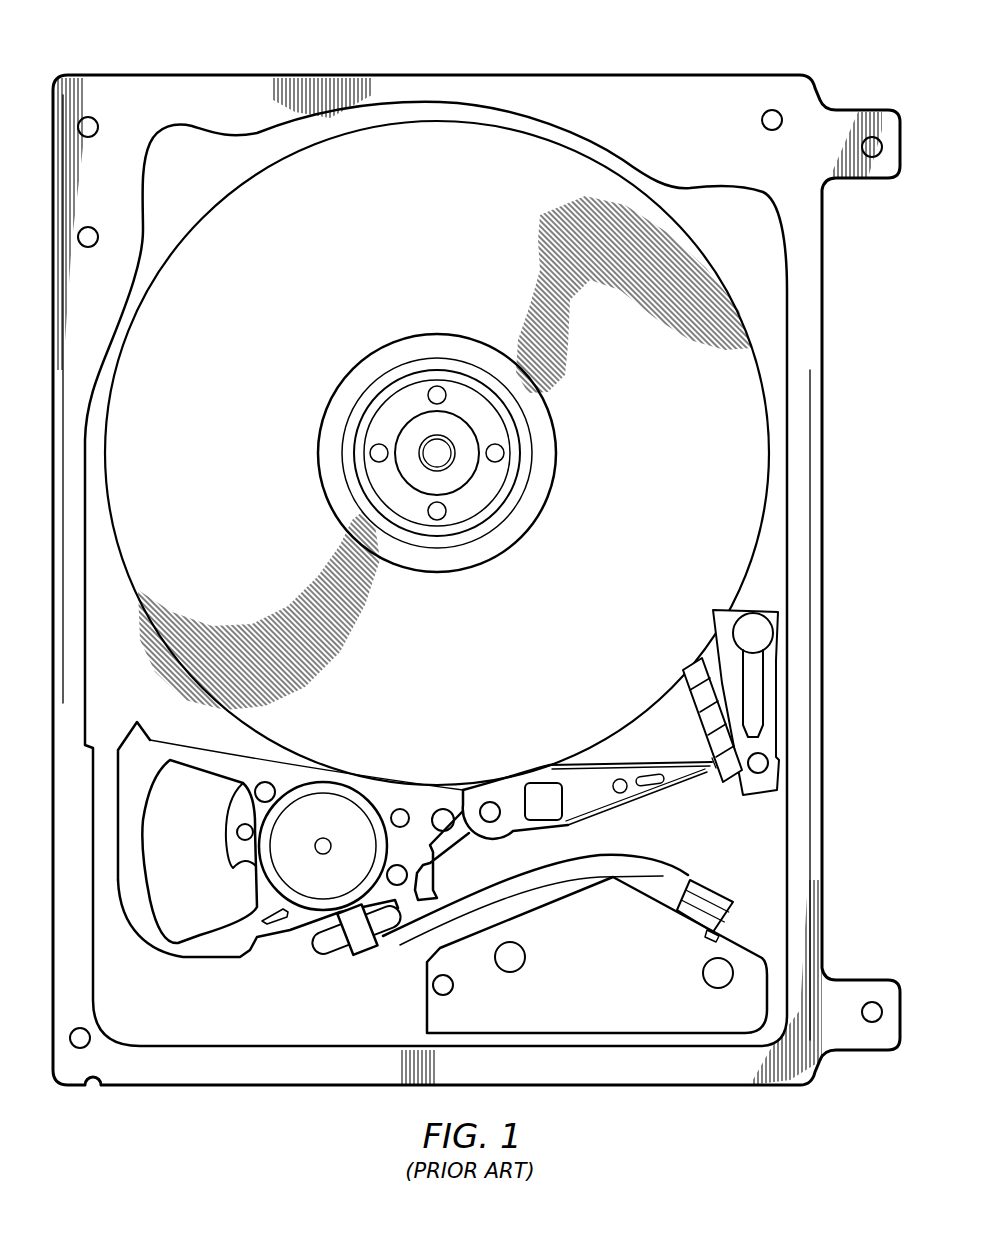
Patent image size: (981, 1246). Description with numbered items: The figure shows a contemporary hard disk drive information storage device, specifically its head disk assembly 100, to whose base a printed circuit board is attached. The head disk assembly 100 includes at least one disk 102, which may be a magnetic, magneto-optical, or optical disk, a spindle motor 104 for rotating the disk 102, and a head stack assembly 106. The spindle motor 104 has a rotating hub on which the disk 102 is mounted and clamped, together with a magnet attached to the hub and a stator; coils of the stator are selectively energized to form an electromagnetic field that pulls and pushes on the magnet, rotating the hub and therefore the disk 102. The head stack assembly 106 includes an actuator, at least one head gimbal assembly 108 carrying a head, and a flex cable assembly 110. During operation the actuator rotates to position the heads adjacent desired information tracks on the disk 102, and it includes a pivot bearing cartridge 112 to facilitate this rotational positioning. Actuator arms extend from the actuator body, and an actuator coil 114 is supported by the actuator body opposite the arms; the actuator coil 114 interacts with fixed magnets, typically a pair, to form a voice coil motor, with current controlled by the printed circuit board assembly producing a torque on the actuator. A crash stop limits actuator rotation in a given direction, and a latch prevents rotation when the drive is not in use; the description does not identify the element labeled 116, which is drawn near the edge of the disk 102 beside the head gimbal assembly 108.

The head disk assembly 100 is at (590, 73).
The disk 102 is at (416, 245).
The spindle motor 104 is at (405, 410).
The head stack assembly 106 is at (482, 782).
The head gimbal assembly 108 is at (650, 762).
The flex cable assembly 110 is at (680, 858).
The pivot bearing cartridge 112 is at (308, 873).
The actuator coil 114 is at (187, 958).
The load/unload ramp 116 is at (695, 663).